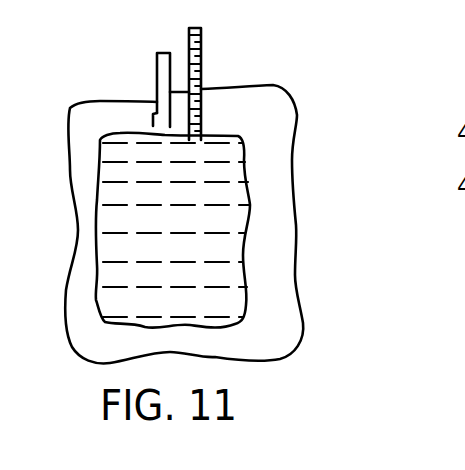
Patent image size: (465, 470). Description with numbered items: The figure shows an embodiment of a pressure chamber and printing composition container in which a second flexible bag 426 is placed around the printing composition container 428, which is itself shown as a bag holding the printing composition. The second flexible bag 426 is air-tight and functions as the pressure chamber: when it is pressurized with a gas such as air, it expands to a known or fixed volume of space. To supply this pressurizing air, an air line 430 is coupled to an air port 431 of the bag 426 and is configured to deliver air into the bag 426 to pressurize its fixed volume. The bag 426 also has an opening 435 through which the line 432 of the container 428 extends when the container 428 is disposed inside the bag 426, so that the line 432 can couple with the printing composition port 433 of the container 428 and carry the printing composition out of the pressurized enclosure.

The second flexible bag 426 is at (268, 235).
The printing composition container 428 is at (223, 180).
The air line 430 is at (160, 63).
The air port 431 is at (73, 145).
The line 432 is at (193, 65).
The printing composition port 433 is at (192, 137).
The opening 435 is at (140, 129).